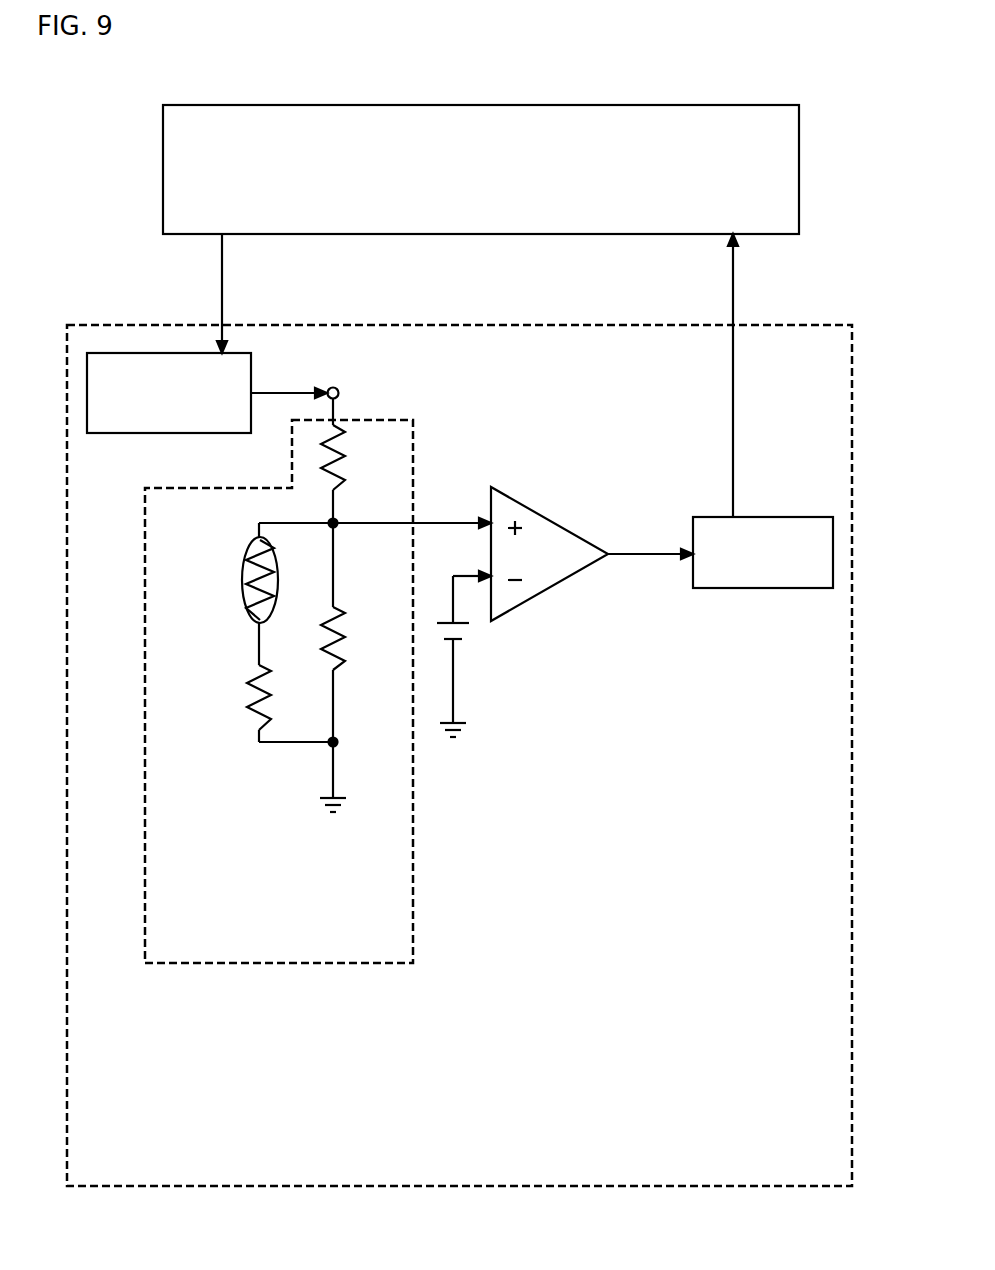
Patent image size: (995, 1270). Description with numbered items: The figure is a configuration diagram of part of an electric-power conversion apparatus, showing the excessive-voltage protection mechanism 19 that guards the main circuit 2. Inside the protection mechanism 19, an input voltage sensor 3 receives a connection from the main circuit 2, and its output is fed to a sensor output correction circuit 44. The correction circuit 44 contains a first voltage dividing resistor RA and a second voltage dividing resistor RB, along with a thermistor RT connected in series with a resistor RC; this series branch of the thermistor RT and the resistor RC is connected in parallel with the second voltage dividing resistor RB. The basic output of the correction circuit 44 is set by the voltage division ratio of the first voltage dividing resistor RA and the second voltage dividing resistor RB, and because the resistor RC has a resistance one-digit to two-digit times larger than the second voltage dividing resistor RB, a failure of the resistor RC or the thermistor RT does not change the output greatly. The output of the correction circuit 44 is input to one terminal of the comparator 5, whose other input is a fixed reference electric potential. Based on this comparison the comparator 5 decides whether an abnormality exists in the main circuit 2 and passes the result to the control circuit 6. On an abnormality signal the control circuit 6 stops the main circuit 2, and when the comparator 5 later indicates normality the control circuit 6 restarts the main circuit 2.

The main circuit 2 is at (690, 115).
The excessive-voltage protection mechanism 19 is at (800, 325).
The input voltage sensor 3 is at (112, 433).
The sensor output correction circuit 44 is at (413, 806).
The comparator 5 is at (540, 515).
The control circuit 6 is at (782, 588).
The first voltage dividing resistor RA is at (345, 448).
The second voltage dividing resistor RB is at (335, 670).
The resistor RC is at (242, 680).
The thermistor RT is at (247, 610).